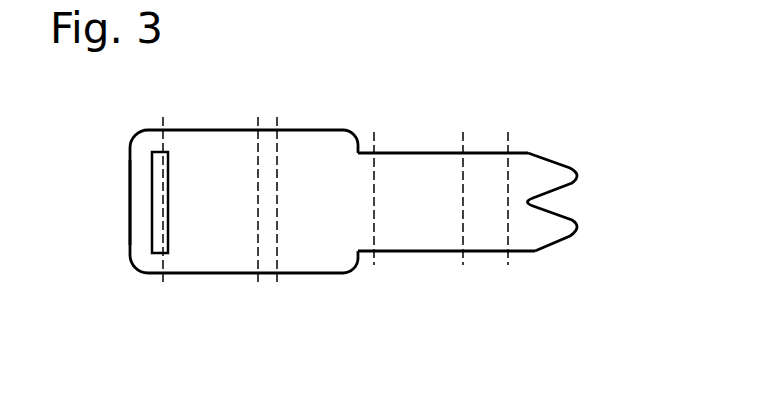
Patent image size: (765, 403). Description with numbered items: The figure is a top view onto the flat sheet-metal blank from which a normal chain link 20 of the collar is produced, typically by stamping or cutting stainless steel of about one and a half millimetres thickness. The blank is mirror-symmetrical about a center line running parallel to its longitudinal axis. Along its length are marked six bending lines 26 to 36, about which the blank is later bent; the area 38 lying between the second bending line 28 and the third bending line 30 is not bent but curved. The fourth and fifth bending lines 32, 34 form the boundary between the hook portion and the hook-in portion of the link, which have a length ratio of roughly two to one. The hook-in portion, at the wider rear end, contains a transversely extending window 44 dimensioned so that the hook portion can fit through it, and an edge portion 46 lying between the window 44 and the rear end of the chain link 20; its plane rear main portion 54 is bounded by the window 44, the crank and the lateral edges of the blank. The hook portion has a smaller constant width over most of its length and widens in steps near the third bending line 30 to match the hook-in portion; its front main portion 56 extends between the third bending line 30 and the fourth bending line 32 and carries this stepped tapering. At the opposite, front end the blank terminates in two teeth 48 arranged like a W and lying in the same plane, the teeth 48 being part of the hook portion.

The normal chain link 20 is at (332, 215).
The first bending line 26 is at (508, 140).
The second bending line 28 is at (468, 139).
The third bending line 30 is at (374, 140).
The fourth bending line 32 is at (280, 122).
The fifth bending line 34 is at (258, 124).
The sixth bending line 36 is at (163, 124).
The curved area 38 is at (421, 232).
The window 44 is at (157, 178).
The edge portion 46 is at (138, 218).
The teeth 48 is at (545, 232).
The rear main portion 54 is at (212, 248).
The front main portion 56 is at (485, 268).